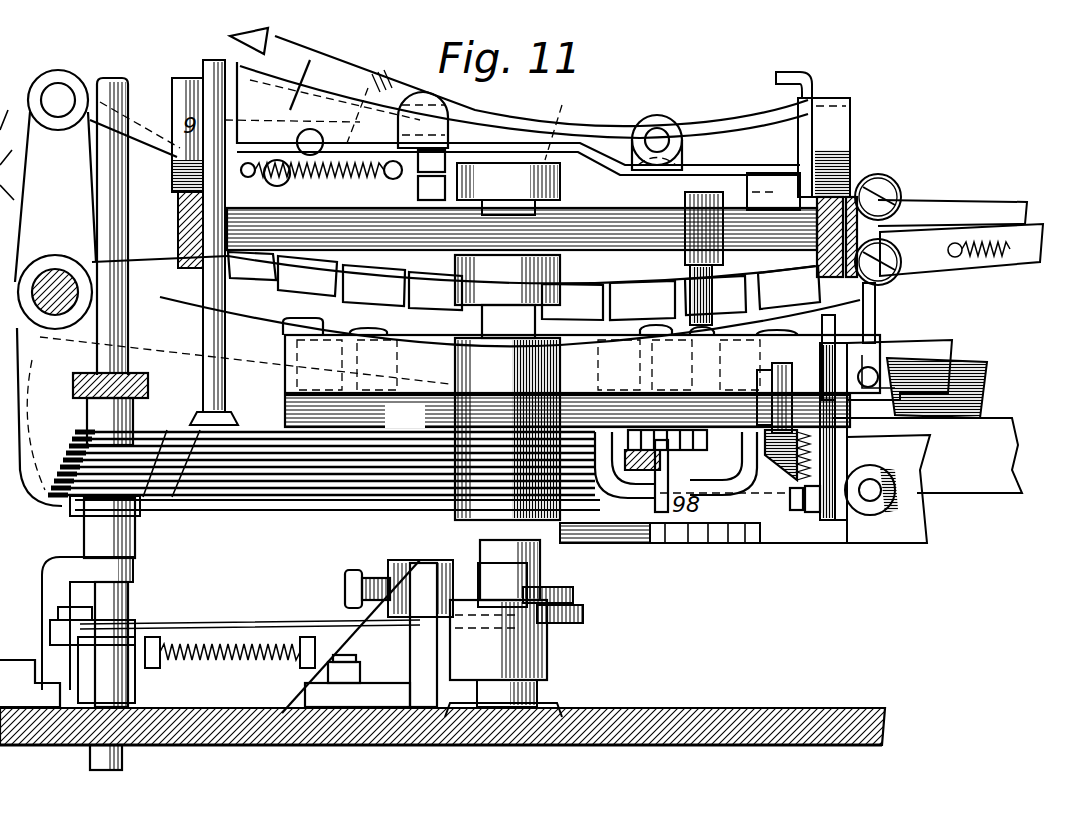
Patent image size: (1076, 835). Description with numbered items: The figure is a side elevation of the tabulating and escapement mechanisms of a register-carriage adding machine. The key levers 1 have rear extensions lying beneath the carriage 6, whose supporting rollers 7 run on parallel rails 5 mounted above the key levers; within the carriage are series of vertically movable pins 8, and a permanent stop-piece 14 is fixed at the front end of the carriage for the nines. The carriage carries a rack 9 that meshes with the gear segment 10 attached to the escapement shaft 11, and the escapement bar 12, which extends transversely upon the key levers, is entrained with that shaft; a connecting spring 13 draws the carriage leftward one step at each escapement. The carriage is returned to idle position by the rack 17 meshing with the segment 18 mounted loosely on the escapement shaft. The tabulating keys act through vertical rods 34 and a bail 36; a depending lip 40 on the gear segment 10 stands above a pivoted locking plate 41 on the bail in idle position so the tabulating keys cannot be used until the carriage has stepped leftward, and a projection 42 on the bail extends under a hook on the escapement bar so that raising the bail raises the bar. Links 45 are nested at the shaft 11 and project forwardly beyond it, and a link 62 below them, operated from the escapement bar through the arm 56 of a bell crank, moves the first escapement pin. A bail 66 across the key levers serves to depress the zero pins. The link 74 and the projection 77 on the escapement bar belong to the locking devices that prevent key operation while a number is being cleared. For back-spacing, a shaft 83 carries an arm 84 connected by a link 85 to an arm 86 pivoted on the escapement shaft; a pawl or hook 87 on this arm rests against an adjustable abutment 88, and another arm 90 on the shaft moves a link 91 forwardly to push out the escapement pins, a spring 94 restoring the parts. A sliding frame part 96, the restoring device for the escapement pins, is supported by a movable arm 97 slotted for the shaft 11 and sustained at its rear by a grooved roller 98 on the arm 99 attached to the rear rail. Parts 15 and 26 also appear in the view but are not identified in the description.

The key levers 1 is at (927, 455).
The rails 5 is at (180, 243).
The carriage 6 is at (516, 101).
The supporting rollers 7 is at (824, 147).
The pins 8 is at (510, 299).
The rack 9 is at (773, 191).
The gear segment 10 is at (610, 200).
The escapement shaft 11 is at (537, 697).
The escapement bar 12 is at (826, 522).
The connecting spring 13 is at (858, 356).
The permanent stop-piece 14 is at (790, 70).
The screw 15 is at (941, 229).
The rack 17 is at (705, 546).
The segment 18 is at (608, 540).
The spring bar 26 is at (961, 250).
The vertical rods 34 is at (778, 386).
The bail 36 is at (899, 370).
The depending lip 40 is at (705, 228).
The pivoted locking plate 41 is at (715, 295).
The projection 42 is at (883, 381).
The link 45 is at (312, 500).
The arm 56 is at (905, 480).
The link 62 is at (168, 500).
The bail 66 is at (952, 388).
The link 74 is at (1034, 256).
The projection 77 is at (886, 313).
The shaft 83 is at (122, 612).
The arm 84 is at (62, 628).
The link 85 is at (250, 613).
The arm 86 is at (583, 615).
The pawl or hook 87 is at (574, 595).
The adjustable abutment 88 is at (446, 576).
The arm 90 is at (80, 510).
The link 91 is at (337, 516).
The spring 94 is at (230, 661).
The sliding frame part 96 is at (692, 471).
The movable arm 97 is at (567, 467).
The roller 98 is at (236, 424).
The arm 99 is at (212, 378).